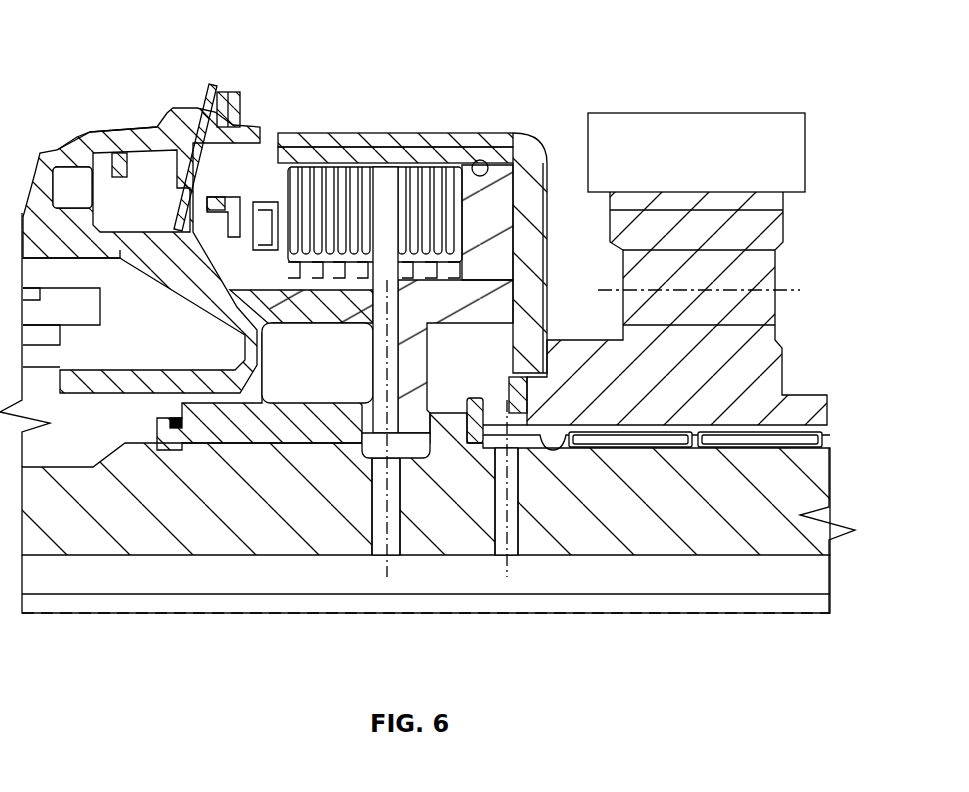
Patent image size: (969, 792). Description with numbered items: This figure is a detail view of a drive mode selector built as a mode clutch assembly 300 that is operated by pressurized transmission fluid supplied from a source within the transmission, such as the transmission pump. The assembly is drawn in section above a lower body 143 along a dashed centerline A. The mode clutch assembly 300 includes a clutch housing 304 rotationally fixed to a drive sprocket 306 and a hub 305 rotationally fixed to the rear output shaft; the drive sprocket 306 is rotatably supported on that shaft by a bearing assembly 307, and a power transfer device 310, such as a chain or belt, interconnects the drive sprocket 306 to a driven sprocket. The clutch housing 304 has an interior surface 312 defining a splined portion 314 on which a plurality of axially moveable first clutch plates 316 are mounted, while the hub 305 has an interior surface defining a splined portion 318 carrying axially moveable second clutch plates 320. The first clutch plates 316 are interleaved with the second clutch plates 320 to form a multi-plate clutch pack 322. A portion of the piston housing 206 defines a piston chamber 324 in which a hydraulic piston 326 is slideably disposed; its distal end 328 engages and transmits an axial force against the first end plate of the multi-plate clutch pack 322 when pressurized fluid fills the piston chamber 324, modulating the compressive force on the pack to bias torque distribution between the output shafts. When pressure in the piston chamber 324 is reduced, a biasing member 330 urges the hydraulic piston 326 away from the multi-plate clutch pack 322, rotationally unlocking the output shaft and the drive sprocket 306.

The mode clutch assembly 300 is at (714, 56).
The base plate 143 is at (780, 520).
The axis A is at (788, 616).
The splined portion 318 is at (327, 245).
The piston chamber 324 is at (75, 188).
The hydraulic piston 326 is at (112, 140).
The piston housing 206 is at (95, 138).
The biasing member 330 is at (197, 118).
The multi-plate clutch pack 322 is at (240, 128).
The distal end 328 is at (232, 238).
The splined portion 314 is at (337, 165).
The first clutch plates 316 is at (268, 160).
The interior surface 312 is at (472, 162).
The second clutch plates 320 is at (388, 283).
The clutch housing 304 is at (540, 215).
The hub 305 is at (532, 200).
The drive sprocket 306 is at (762, 228).
The power transfer device 310 is at (792, 145).
The bearing assembly 307 is at (803, 440).